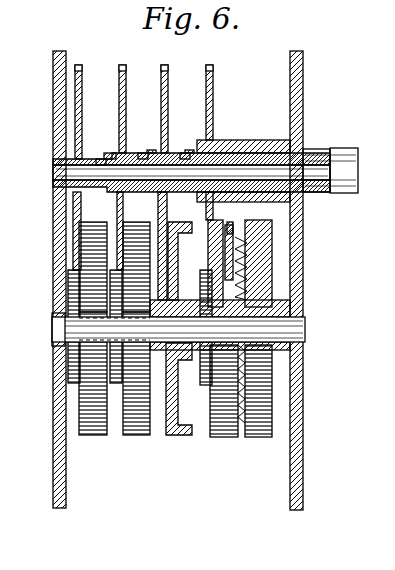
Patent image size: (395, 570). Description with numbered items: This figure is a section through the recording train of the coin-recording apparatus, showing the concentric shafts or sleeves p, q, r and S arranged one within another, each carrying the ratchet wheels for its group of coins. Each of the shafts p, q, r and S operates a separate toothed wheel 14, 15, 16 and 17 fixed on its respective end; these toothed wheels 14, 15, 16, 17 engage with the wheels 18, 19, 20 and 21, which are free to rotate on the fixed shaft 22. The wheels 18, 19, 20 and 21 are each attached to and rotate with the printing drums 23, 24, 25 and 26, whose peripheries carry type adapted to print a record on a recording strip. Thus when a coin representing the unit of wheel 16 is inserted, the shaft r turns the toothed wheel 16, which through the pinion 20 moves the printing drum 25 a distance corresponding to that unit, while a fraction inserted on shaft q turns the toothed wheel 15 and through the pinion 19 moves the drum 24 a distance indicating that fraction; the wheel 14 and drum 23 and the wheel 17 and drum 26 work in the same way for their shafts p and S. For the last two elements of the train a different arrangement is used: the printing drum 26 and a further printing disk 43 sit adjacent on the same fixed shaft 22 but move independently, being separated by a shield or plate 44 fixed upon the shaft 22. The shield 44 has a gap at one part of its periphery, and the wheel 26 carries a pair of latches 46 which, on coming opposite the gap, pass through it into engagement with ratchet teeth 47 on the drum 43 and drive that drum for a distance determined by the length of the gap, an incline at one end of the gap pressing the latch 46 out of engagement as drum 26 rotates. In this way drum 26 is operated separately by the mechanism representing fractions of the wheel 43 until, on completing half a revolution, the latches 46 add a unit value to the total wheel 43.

The toothed wheel 14 is at (82, 100).
The toothed wheel 15 is at (126, 100).
The toothed wheel 16 is at (168, 100).
The toothed wheel 17 is at (213, 99).
The shaft p is at (98, 158).
The shaft q is at (142, 153).
The shaft r is at (186, 153).
The shaft S is at (228, 141).
The wheel 18 is at (70, 283).
The pinion 19 is at (115, 272).
The pinion 20 is at (158, 272).
The pinion 21 is at (206, 386).
The fixed shaft 22 is at (306, 330).
The printing drum 23 is at (92, 436).
The printing drum 24 is at (137, 436).
The printing drum 25 is at (180, 436).
The printing drum 26 is at (228, 438).
The printing disk 43 is at (258, 438).
The shield 44 is at (243, 292).
The latch 46 is at (230, 222).
The ratchet teeth 47 is at (247, 258).